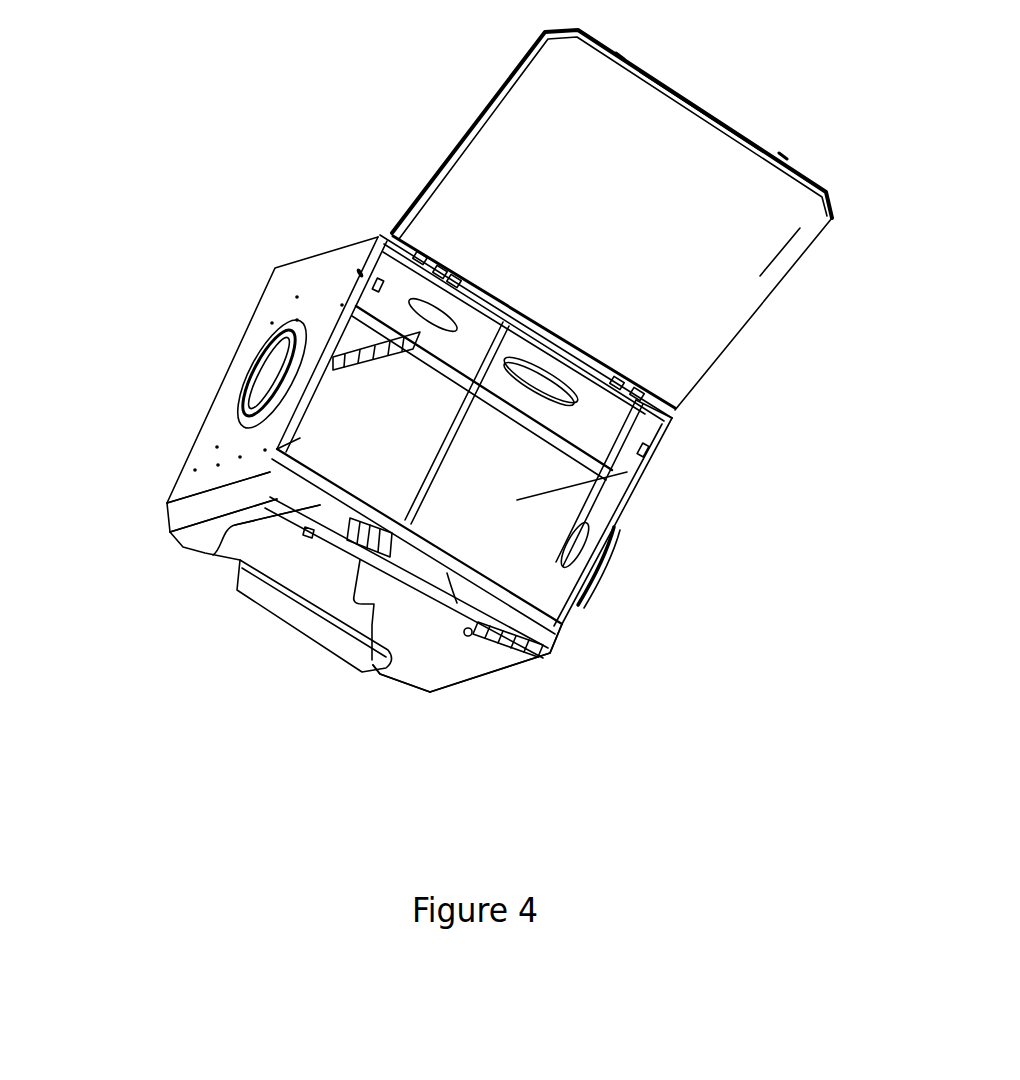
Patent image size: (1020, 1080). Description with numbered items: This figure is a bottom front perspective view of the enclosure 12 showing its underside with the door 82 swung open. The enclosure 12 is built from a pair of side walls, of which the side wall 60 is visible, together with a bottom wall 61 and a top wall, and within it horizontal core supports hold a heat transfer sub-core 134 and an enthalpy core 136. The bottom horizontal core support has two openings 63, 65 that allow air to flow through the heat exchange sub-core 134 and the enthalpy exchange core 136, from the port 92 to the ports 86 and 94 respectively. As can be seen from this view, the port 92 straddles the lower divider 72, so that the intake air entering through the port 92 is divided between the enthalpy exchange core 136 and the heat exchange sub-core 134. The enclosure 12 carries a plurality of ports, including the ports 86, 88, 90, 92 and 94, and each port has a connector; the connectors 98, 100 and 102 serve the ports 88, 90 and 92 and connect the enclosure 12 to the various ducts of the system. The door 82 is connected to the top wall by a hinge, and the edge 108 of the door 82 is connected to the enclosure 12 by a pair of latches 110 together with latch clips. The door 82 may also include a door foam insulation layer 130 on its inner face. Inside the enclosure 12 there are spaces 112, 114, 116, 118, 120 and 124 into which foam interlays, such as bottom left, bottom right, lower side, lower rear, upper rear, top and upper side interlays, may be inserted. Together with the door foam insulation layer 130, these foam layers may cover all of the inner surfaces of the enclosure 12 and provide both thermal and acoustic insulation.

The enclosure 12 is at (378, 152).
The door 82 is at (542, 122).
The latches 110 is at (620, 57).
The edge 108 is at (690, 98).
The door foam insulation layer 130 is at (757, 247).
The space 120 is at (382, 300).
The port 86 is at (393, 312).
The port 94 is at (553, 378).
The heat transfer sub-core 134 is at (383, 427).
The side wall 60 is at (287, 310).
The port 90 is at (240, 383).
The connector 100 is at (240, 420).
The space 116 is at (296, 438).
The space 112 is at (283, 479).
The opening 63 is at (213, 555).
The port 92 is at (297, 628).
The lower divider 72 is at (382, 545).
The connector 102 is at (380, 648).
The bottom wall 61 is at (420, 653).
The opening 65 is at (493, 637).
The port 88 is at (560, 567).
The connector 98 is at (593, 597).
The space 114 is at (567, 630).
The space 124 is at (604, 432).
The enthalpy core 136 is at (627, 472).
The space 118 is at (602, 511).